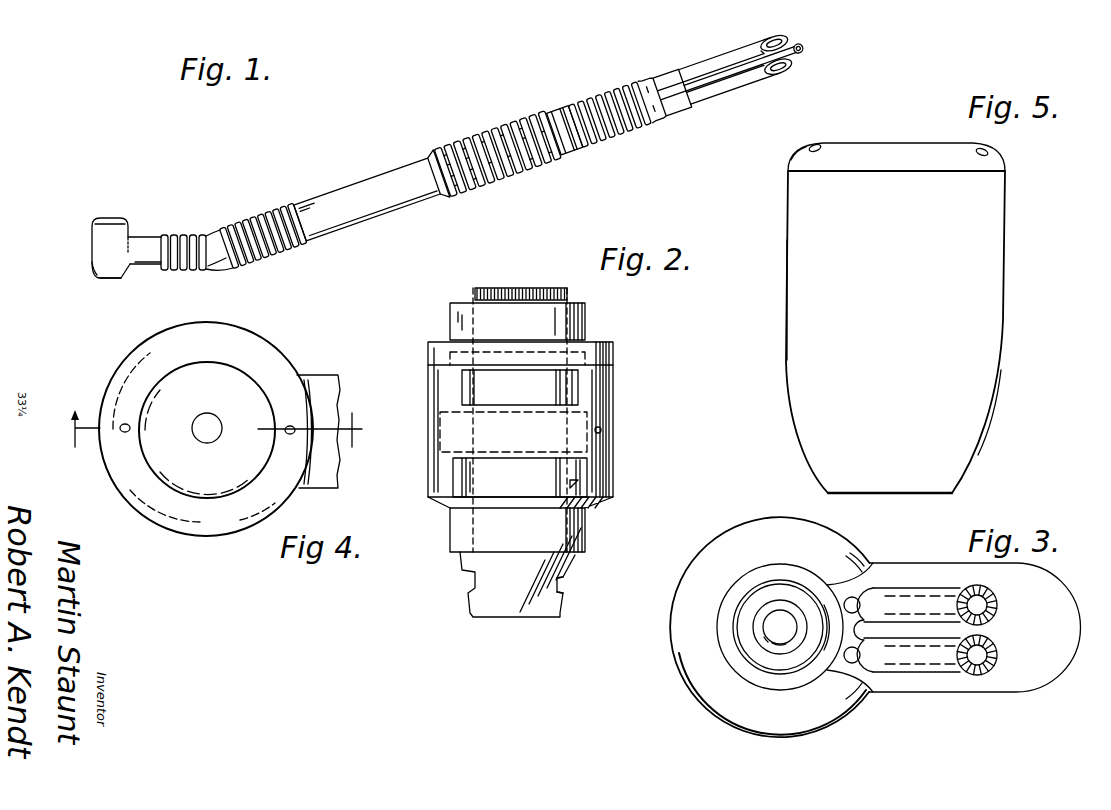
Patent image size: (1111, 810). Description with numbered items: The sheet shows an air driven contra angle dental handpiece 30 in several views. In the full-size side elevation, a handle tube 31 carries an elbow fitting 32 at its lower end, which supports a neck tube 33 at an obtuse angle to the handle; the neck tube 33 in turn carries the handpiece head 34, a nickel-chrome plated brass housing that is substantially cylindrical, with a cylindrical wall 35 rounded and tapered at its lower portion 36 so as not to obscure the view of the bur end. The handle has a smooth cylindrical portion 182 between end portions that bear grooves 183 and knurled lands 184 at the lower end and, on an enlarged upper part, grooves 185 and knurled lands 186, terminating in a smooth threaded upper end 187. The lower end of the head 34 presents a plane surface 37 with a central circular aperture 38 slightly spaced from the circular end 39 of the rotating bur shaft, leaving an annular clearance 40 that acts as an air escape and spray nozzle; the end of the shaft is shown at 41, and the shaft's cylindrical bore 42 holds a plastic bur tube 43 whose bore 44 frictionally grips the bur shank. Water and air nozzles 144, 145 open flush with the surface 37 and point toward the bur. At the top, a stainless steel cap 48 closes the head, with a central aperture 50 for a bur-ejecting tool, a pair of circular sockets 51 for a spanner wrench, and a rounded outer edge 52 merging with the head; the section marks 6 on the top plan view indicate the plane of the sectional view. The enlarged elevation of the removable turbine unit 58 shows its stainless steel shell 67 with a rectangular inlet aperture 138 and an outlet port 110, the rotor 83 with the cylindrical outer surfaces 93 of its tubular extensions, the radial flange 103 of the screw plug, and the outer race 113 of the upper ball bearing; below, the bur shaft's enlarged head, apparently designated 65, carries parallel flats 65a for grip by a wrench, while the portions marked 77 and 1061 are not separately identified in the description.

In FIG. 1, the air driven handpiece 30 is at (356, 168).
In FIG. 1, the handle tube 31 is at (399, 176).
In FIG. 1, the elbow fitting 32 is at (222, 270).
In FIG. 1, the neck tube 33 is at (145, 234).
In FIG. 4, the neck tube 33 is at (330, 398).
In FIG. 3, the neck tube 33 is at (945, 574).
In FIG. 1, the handpiece head 34 is at (100, 236).
In FIG. 4, the handpiece head 34 is at (102, 381).
In FIG. 5, the handpiece head 34 is at (996, 218).
In FIG. 1, the cylindrical wall 35 is at (92, 250).
In FIG. 5, the cylindrical wall 35 is at (786, 305).
In FIG. 1, the lower portion 36 is at (96, 271).
In FIG. 5, the lower portion 36 is at (980, 452).
In FIG. 1, the plane surface 37 is at (110, 279).
In FIG. 5, the plane surface 37 is at (931, 494).
In FIG. 3, the plane surface 37 is at (803, 575).
In FIG. 3, the central circular aperture 38 is at (780, 583).
In FIG. 3, the bur shaft 39 is at (755, 598).
In FIG. 3, the annular clearance 40 is at (774, 582).
In FIG. 3, the end of bur shaft 41 is at (748, 629).
In FIG. 3, the cylindrical bore 42 is at (762, 639).
In FIG. 3, the plastic bur tube 43 is at (776, 648).
In FIG. 3, the cylindrical bore 44 is at (793, 636).
In FIG. 1, the top cap 48 is at (105, 219).
In FIG. 4, the top cap 48 is at (270, 372).
In FIG. 5, the top cap 48 is at (896, 148).
In FIG. 4, the central aperture 50 is at (218, 427).
In FIG. 4, the circular sockets 51 is at (129, 427).
In FIG. 5, the circular sockets 51 is at (820, 146).
In FIG. 5, the outer edge portion 52 is at (800, 160).
In FIG. 2, the removable turbine unit 58 is at (620, 401).
In FIG. 2, the shaft end 65 is at (522, 602).
In FIG. 2, the parallel flats 65a is at (561, 585).
In FIG. 2, the cylindrical shell 67 is at (440, 377).
In FIG. 2, the housing 77 is at (612, 355).
In FIG. 2, the rotor 83 is at (602, 431).
In FIG. 2, the cylindrical outer surfaces 93 is at (478, 475).
In FIG. 2, the radial flange 103 is at (568, 295).
In FIG. 2, the outlet port 110 is at (580, 481).
In FIG. 2, the outer race 113 is at (578, 327).
In FIG. 2, the rectangular aperture 138 is at (506, 407).
In FIG. 3, the water nozzle 144 is at (855, 598).
In FIG. 3, the air nozzle 145 is at (855, 663).
In FIG. 1, the smooth cylindrical portion 182 is at (387, 207).
In FIG. 1, the grooves 183 is at (258, 222).
In FIG. 1, the knurled lands 184 is at (280, 220).
In FIG. 1, the grooves 185 is at (471, 142).
In FIG. 1, the knurled lands 186 is at (500, 134).
In FIG. 1, the smooth cylindrical upper end 187 is at (542, 113).
In FIG. 2, the lower housing section 1061 is at (585, 519).
In FIG. 4, the section line 6- 6 is at (216, 437).